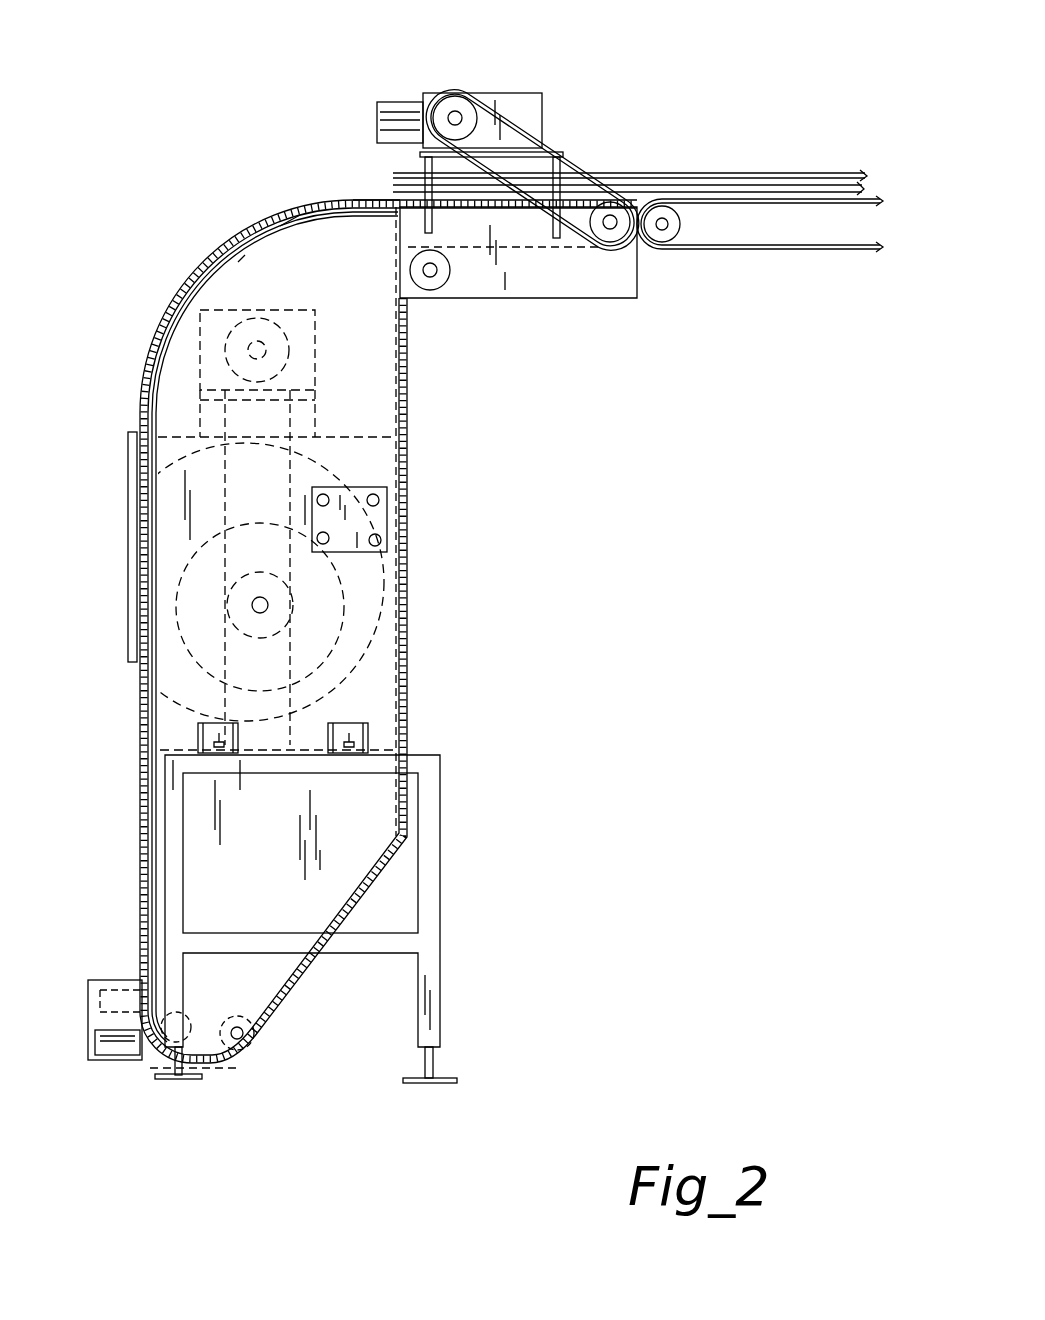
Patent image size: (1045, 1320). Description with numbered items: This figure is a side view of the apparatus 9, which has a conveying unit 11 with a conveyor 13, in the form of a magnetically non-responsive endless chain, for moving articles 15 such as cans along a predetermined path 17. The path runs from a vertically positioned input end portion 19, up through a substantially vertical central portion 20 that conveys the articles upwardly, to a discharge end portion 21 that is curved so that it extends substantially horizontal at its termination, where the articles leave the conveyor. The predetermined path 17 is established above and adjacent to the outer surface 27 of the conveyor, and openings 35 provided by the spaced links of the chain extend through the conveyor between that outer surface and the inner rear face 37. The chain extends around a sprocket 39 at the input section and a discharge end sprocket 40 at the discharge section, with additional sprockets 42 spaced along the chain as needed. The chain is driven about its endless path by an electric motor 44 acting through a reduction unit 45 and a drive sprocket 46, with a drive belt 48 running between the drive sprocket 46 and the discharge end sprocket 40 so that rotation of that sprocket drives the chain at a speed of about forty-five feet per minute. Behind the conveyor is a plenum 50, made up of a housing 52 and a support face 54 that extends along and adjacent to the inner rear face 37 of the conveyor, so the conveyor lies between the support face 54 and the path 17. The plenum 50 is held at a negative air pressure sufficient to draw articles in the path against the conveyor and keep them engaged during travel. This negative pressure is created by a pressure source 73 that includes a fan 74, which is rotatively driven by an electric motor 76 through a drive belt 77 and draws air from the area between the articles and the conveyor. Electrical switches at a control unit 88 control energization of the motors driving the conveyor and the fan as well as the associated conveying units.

The apparatus 9 is at (162, 176).
The conveying unit 11 is at (245, 198).
The conveyor 13 is at (198, 277).
The articles 15 is at (115, 1045).
The predetermined path 17 is at (142, 400).
The input end portion 19 is at (142, 958).
The central portion 20 is at (148, 685).
The discharge end portion 21 is at (365, 200).
The outer surface 27 is at (150, 752).
The openings 35 is at (142, 820).
The inner rear face 37 is at (278, 223).
The sprocket 39 is at (190, 1005).
The discharge end sprocket 40 is at (613, 225).
The additional sprockets 42 is at (432, 275).
The electric motor 44 is at (405, 100).
The reduction unit 45 is at (523, 93).
The drive sprocket 46 is at (455, 118).
The drive belt 48 is at (525, 147).
The plenum 50 is at (395, 415).
The housing 52 is at (373, 700).
The support face 54 is at (238, 262).
The pressure source 73 is at (410, 642).
The fan 74 is at (408, 600).
The electric motor 76 is at (320, 323).
The drive belt 77 is at (318, 413).
The control unit 88 is at (378, 488).